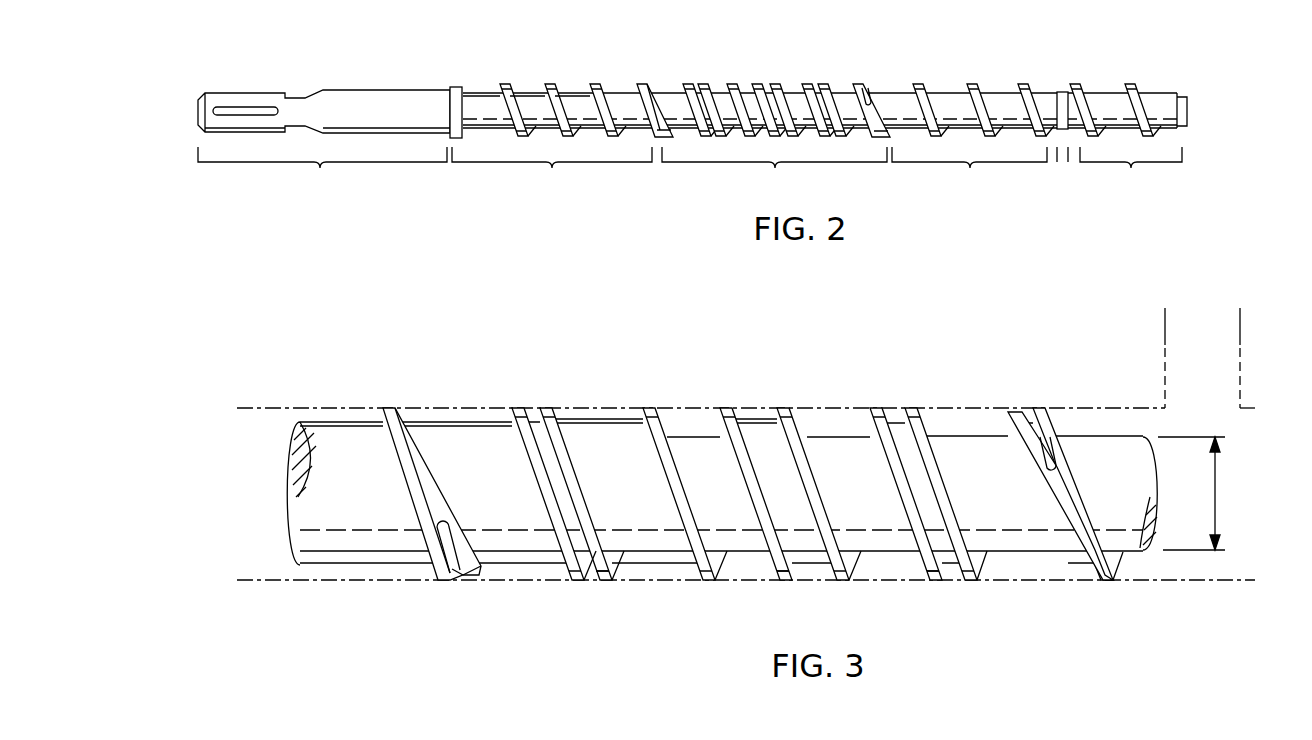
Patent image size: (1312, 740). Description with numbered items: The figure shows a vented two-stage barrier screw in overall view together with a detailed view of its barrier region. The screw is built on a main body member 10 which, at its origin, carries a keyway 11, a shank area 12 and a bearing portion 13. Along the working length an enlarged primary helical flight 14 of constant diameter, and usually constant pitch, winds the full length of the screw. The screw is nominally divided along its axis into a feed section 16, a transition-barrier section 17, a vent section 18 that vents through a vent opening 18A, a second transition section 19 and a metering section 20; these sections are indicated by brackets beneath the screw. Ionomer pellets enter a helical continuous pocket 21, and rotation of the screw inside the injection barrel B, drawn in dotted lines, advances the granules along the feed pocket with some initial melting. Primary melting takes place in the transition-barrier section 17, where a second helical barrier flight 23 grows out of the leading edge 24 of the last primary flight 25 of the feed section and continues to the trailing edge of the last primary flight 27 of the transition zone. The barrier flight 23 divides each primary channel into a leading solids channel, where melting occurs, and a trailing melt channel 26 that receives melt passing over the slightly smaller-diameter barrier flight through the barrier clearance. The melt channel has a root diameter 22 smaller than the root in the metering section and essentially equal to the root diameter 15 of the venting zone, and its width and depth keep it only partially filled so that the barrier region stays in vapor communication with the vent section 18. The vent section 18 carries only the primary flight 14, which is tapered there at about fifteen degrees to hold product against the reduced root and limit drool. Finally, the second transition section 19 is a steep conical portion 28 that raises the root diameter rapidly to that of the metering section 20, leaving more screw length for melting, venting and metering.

In FIG. 2, the main body member 10 is at (940, 93).
In FIG. 3, the main body member 10 is at (333, 432).
In FIG. 2, the keyway 11 is at (226, 107).
In FIG. 2, the shank area 12 is at (324, 120).
In FIG. 2, the bearing portion 13 is at (453, 83).
In FIG. 2, the helical flight 14 is at (506, 88).
In FIG. 3, the helical flight 14 is at (520, 410).
In FIG. 3, the root diameter 15 is at (1217, 478).
In FIG. 2, the feed section 16 is at (552, 173).
In FIG. 2, the transition-barrier section 17 is at (774, 173).
In FIG. 2, the vent section 18 is at (969, 173).
In FIG. 3, the vent opening 18A is at (1243, 318).
In FIG. 2, the second transition section 19 is at (1062, 162).
In FIG. 2, the metering section 20 is at (1131, 173).
In FIG. 2, the helical continuous pocket 21 is at (474, 93).
In FIG. 3, the helical continuous pocket 21 is at (465, 420).
In FIG. 3, the root diameter 22 is at (600, 556).
In FIG. 3, the barrier flight 23 is at (475, 562).
In FIG. 3, the leading edge 24 is at (432, 493).
In FIG. 3, the last primary flight 25 is at (443, 580).
In FIG. 3, the melt channel 26 is at (458, 573).
In FIG. 3, the last primary flight 27 is at (1052, 425).
In FIG. 2, the conical portion 28 is at (1061, 92).
In FIG. 3, the injection barrel B is at (828, 404).